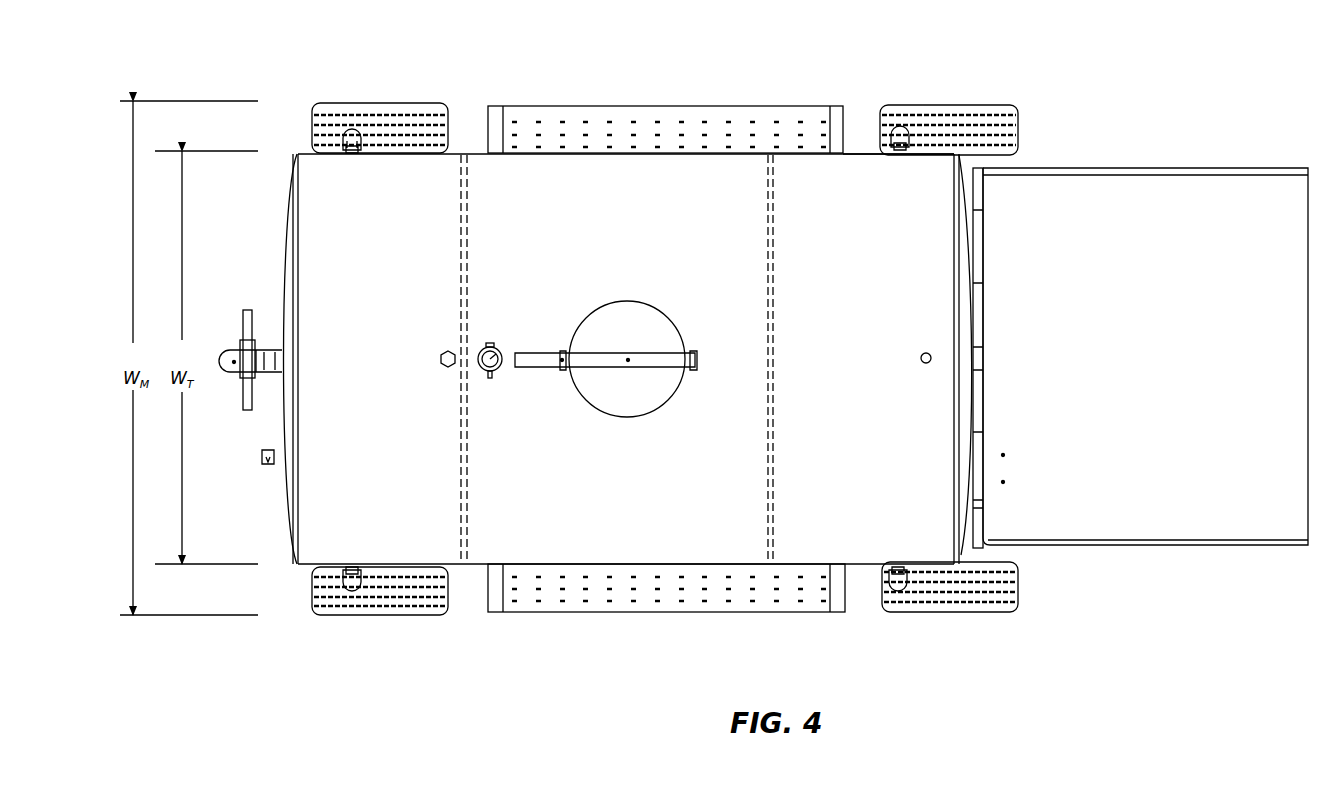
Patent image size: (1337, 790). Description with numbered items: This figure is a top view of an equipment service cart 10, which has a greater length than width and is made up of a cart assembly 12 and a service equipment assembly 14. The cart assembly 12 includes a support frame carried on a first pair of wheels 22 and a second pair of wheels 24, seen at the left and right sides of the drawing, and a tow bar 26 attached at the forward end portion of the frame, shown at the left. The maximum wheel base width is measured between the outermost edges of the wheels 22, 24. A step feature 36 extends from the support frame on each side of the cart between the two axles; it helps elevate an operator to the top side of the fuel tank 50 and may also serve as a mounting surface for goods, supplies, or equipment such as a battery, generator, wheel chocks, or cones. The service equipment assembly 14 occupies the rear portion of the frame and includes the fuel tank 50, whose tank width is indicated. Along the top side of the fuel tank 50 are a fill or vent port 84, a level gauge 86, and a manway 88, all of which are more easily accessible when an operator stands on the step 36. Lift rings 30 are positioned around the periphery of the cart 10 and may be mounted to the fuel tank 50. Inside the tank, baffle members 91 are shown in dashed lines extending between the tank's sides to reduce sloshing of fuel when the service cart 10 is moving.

The equipment service cart 10 is at (1097, 81).
The cart assembly 12 is at (557, 101).
The service equipment assembly 14 is at (1197, 162).
The first pair of wheels 22 is at (385, 103).
The second pair of wheels 24 is at (947, 105).
The tow bar 26 is at (243, 318).
The lift rings 30 is at (312, 129).
The step feature 36 is at (658, 112).
The fuel tank 50 is at (858, 149).
The vent port 84 is at (498, 349).
The level gauge 86 is at (920, 362).
The manway 88 is at (650, 321).
The baffle member 91 is at (463, 245).